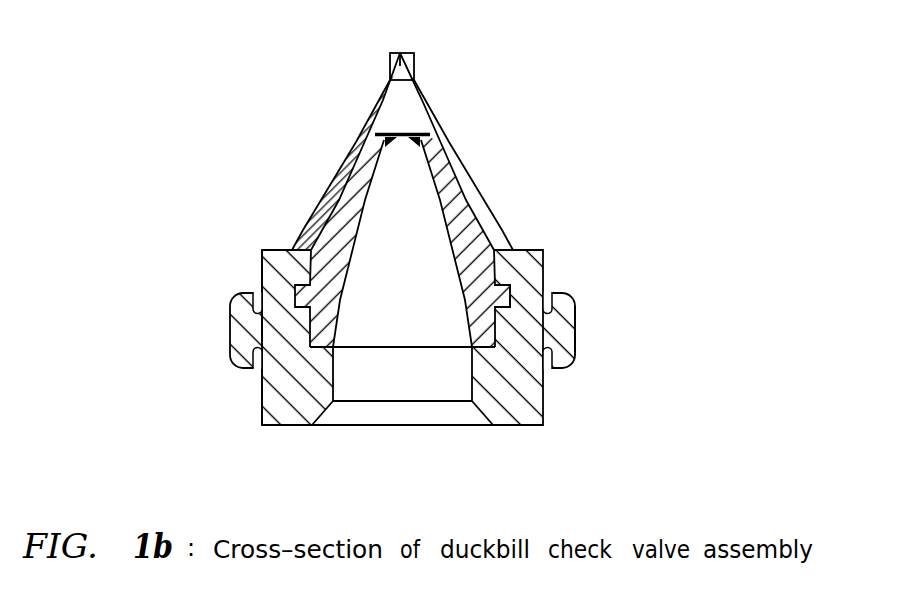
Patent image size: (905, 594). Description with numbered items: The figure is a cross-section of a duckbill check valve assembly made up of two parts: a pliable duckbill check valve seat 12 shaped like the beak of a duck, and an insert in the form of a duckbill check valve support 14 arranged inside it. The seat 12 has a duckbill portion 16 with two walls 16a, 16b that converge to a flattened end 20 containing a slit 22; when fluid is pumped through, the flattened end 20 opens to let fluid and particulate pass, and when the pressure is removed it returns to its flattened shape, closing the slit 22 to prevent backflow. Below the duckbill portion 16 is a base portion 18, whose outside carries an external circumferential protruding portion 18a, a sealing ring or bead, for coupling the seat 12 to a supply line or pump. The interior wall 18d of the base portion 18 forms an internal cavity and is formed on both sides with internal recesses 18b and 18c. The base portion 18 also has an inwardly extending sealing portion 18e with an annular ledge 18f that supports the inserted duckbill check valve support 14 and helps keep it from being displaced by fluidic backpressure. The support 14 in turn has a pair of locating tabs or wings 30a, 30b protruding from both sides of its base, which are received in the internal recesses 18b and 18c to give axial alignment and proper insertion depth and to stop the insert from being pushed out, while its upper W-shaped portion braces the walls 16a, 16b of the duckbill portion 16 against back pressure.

The duckbill check valve seat 12 is at (470, 185).
The duckbill check valve support 14 is at (473, 236).
The duckbill portion 16 is at (444, 120).
The wall of the duckbill portion 16a is at (346, 160).
The wall of the duckbill portion 16b is at (462, 158).
The base portion 18 is at (543, 400).
The external circumferential protruding portion 18a is at (576, 322).
The internal recess 18b is at (511, 292).
The internal recess 18c is at (262, 293).
The internal or interior wall 18d is at (306, 227).
The inwardly extending sealing portion 18e is at (325, 408).
The annular ledge 18f is at (275, 413).
The flattened end 20 is at (414, 63).
The slit 22 is at (402, 54).
The locating tab or wing 30a is at (262, 331).
The locating tab or wing 30b is at (565, 328).